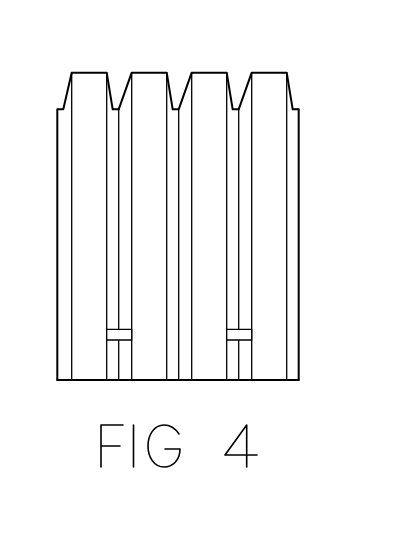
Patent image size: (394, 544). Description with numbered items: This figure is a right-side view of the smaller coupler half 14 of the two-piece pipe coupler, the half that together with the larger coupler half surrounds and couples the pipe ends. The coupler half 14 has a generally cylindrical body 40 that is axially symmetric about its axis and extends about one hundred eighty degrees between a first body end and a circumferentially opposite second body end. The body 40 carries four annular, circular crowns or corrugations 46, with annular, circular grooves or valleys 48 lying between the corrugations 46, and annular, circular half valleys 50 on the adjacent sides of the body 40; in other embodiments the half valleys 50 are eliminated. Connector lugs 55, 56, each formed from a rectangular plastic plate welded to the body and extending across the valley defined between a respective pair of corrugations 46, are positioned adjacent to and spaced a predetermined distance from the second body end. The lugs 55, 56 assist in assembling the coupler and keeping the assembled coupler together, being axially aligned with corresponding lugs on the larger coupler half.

The second, smaller coupling member or coupler half 14 is at (298, 363).
The cylindrical body 40 is at (298, 322).
The annular, circular crowns or corrugations 46 is at (210, 73).
The annular, circular grooves or valleys 48 is at (121, 106).
The annular, circular half valleys 50 is at (297, 106).
The connector lug 55 is at (107, 332).
The connector lug 56 is at (252, 332).